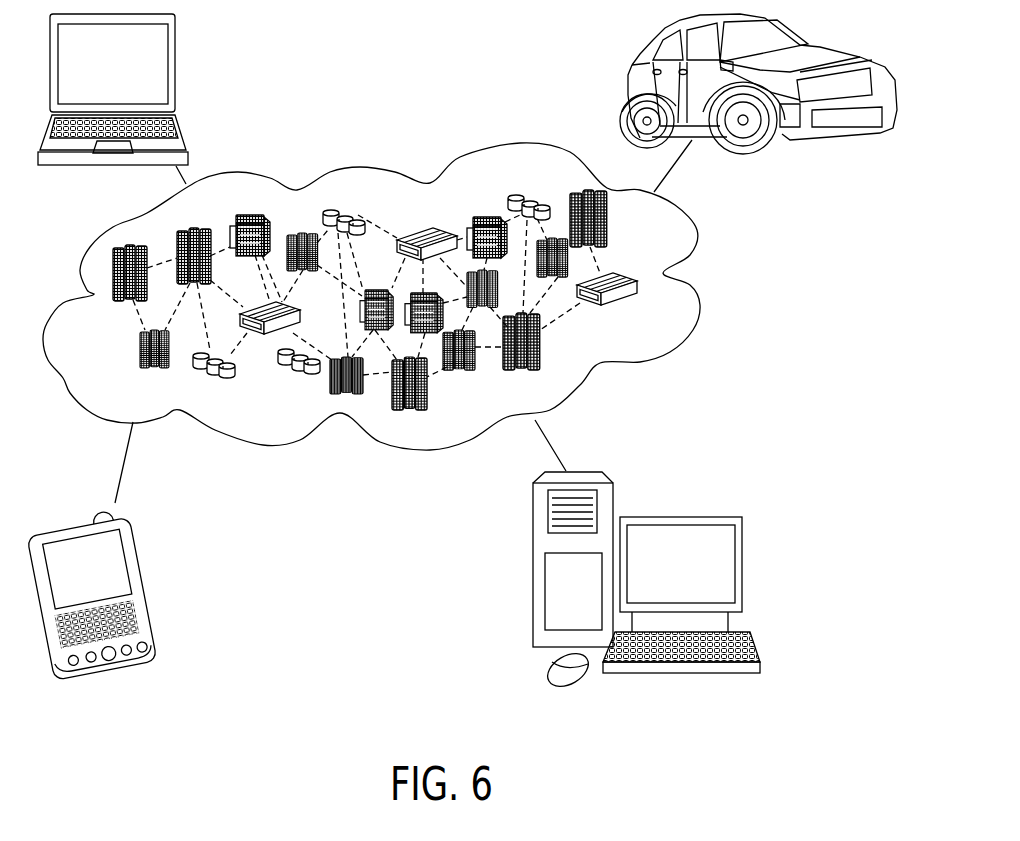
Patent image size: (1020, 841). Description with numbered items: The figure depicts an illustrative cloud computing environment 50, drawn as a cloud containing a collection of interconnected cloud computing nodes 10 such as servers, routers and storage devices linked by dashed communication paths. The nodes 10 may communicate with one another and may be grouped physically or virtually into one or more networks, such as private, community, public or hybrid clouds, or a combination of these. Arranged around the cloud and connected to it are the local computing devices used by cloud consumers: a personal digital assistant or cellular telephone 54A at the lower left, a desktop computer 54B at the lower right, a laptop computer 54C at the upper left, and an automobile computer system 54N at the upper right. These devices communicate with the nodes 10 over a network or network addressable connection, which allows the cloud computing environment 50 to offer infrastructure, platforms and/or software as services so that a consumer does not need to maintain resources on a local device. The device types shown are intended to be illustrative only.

The cloud computing nodes 10 is at (648, 323).
The cloud computing environment 50 is at (698, 230).
The personal digital assistant or cellular telephone 54A is at (145, 565).
The desktop computer 54B is at (742, 565).
The laptop computer 54C is at (176, 68).
The automobile computer system 54N is at (808, 37).